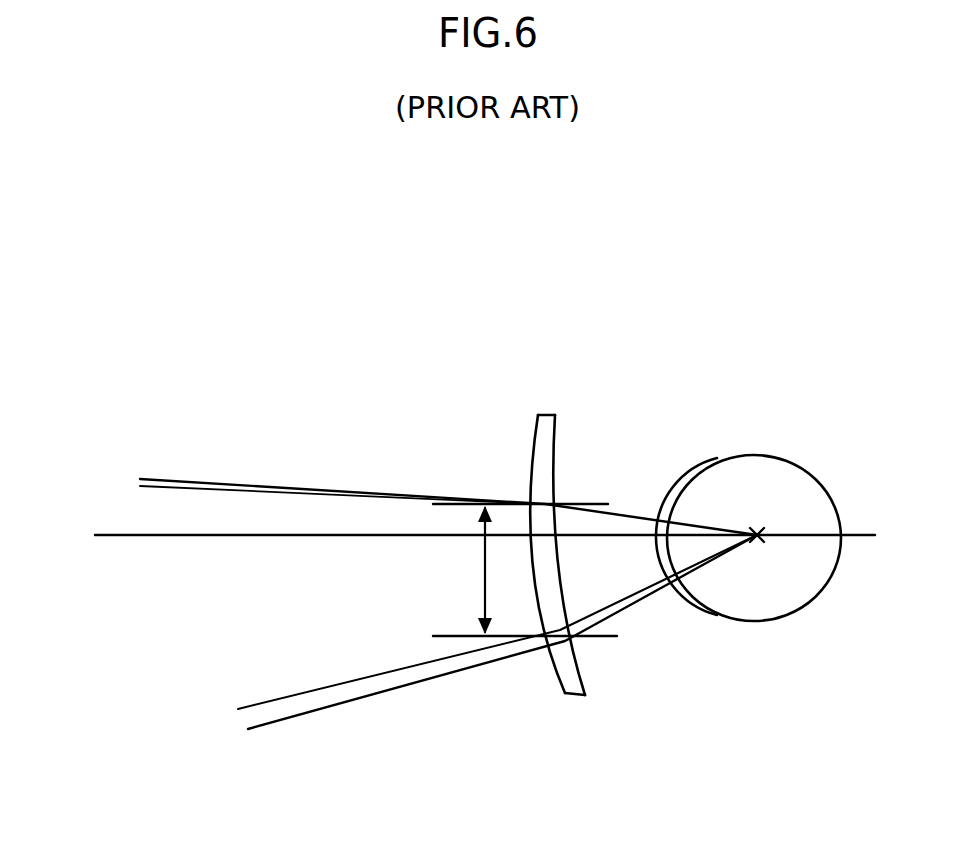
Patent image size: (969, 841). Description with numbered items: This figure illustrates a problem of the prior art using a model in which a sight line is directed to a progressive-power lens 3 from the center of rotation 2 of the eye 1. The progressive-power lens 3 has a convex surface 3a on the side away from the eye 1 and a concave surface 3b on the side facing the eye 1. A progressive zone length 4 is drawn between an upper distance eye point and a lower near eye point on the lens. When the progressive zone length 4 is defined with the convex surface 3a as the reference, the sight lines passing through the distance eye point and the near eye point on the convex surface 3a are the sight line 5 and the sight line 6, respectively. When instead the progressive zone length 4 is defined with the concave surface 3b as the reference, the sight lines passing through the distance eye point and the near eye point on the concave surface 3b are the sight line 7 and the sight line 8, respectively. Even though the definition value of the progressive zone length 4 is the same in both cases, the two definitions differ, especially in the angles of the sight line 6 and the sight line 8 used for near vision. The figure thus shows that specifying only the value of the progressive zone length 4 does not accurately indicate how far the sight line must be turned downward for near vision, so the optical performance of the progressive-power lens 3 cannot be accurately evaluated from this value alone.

The eye 1 is at (792, 460).
The center of rotation 2 is at (757, 530).
The progressive-power lens 3 is at (568, 606).
The convex surface 3a is at (547, 669).
The concave surface 3b is at (583, 659).
The progressive zone length 4 is at (483, 580).
The sight line 5 is at (172, 487).
The sight line 6 is at (257, 703).
The sight line 7 is at (173, 480).
The sight line 8 is at (250, 732).